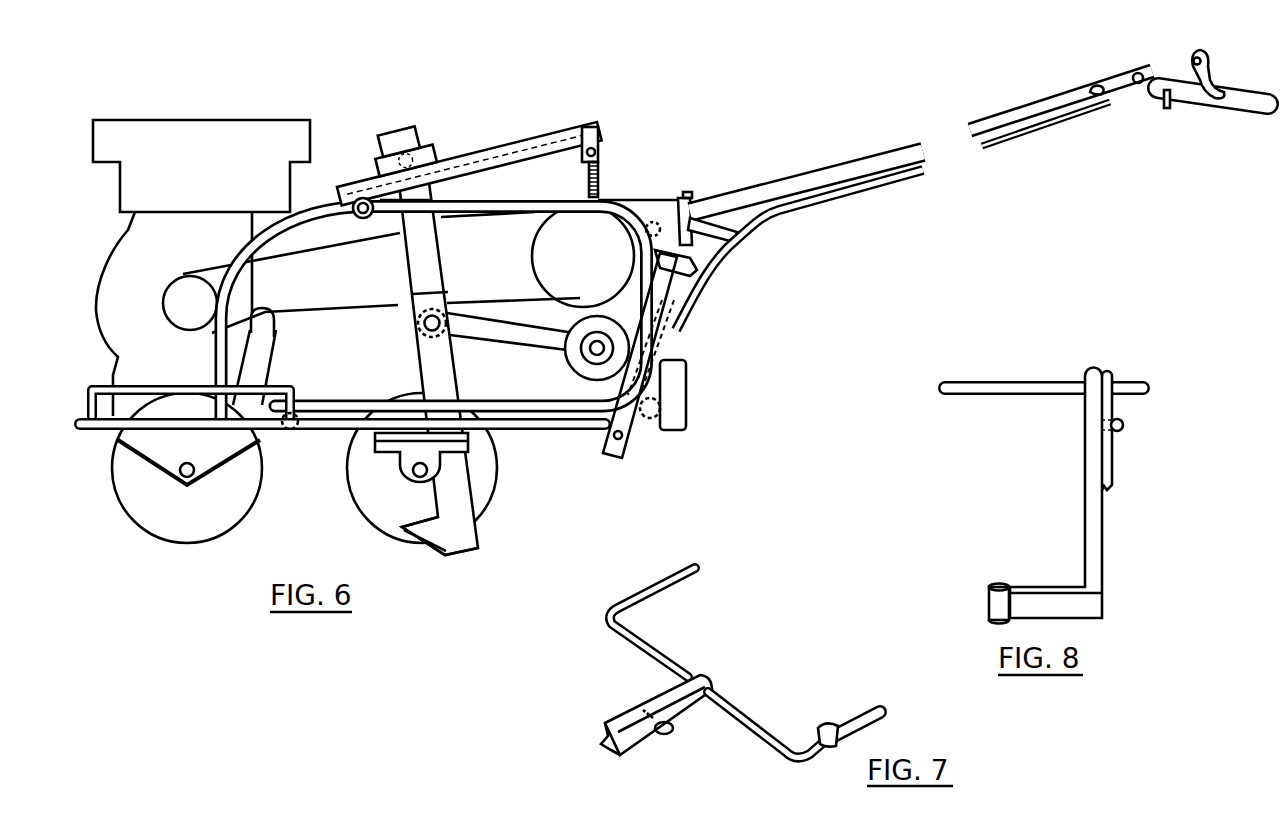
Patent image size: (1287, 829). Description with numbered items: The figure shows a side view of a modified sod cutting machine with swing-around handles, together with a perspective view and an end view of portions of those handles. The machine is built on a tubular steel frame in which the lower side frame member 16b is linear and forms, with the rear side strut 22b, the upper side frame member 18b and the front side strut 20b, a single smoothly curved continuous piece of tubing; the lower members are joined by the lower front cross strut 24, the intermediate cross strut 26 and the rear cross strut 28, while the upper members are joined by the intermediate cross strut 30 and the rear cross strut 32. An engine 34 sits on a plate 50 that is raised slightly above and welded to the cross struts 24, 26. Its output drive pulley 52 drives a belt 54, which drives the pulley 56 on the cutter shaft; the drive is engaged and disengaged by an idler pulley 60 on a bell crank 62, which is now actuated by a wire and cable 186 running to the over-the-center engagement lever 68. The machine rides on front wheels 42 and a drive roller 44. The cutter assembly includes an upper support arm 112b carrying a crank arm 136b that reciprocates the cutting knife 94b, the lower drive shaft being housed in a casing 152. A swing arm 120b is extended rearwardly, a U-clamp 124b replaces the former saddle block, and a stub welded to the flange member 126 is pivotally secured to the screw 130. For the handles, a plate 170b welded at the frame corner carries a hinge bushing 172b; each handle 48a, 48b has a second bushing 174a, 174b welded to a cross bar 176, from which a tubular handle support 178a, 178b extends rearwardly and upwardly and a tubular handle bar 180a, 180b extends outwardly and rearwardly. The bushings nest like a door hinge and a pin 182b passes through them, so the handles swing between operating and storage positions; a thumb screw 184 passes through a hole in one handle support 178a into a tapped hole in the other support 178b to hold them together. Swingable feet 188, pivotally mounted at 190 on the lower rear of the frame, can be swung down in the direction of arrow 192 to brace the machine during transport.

In FIG. 6, the engine 34 is at (178, 118).
In FIG. 6, the horizontal plate 50 is at (140, 350).
In FIG. 6, the output drive pulley 52 is at (163, 303).
In FIG. 6, the belt 54 is at (322, 247).
In FIG. 6, the idler pulley 60 is at (277, 325).
In FIG. 6, the bell crank 62 is at (272, 362).
In FIG. 6, the front wheels 42 is at (242, 512).
In FIG. 6, the drive roller 44 is at (497, 485).
In FIG. 6, the pulley 56 is at (537, 266).
In FIG. 6, the upper support arm 112b is at (446, 255).
In FIG. 6, the cutting knife 94b is at (470, 556).
In FIG. 6, the crank arm 136b is at (490, 347).
In FIG. 6, the casing 152 is at (588, 318).
In FIG. 6, the front side strut 20b is at (212, 378).
In FIG. 6, the upper side frame member 18b is at (500, 202).
In FIG. 6, the U-clamp 124b is at (366, 220).
In FIG. 6, the lower front cross strut 24 is at (92, 434).
In FIG. 6, the lower side frame member 16b is at (330, 428).
In FIG. 6, the lower intermediate cross strut 26 is at (290, 432).
In FIG. 6, the swing arm 120b is at (470, 152).
In FIG. 6, the upper intermediate cross strut 30 is at (360, 214).
In FIG. 6, the flange member 126 is at (592, 128).
In FIG. 6, the screw 130 is at (602, 172).
In FIG. 6, the plate 170b is at (643, 198).
In FIG. 6, the hinge bushing 172b is at (700, 197).
In FIG. 6, the second bushing 174b is at (735, 236).
In FIG. 6, the pin 182b is at (706, 252).
In FIG. 6, the rear side strut 22b is at (693, 298).
In FIG. 6, the tubular handle support 178b is at (810, 178).
In FIG. 7, the tubular handle support 178b is at (617, 753).
In FIG. 6, the wire and cable 186 is at (878, 182).
In FIG. 6, the handle 48b is at (856, 152).
In FIG. 8, the handle 48b is at (1120, 407).
In FIG. 6, the thumb screw 184 is at (1092, 88).
In FIG. 7, the thumb screw 184 is at (670, 733).
In FIG. 6, the over-the-center drive engagement lever 68 is at (1218, 72).
In FIG. 6, the upper rear cross strut 32 is at (646, 236).
In FIG. 6, the arrow 192 is at (693, 343).
In FIG. 6, the swingable feet 188 is at (668, 356).
In FIG. 6, the lower rear cross strut 28 is at (662, 409).
In FIG. 6, the pivot mounting 190 is at (624, 440).
In FIG. 7, the tubular handle bar 180a is at (648, 642).
In FIG. 7, the tubular handle bar 180b is at (748, 716).
In FIG. 7, the tubular handle support 178a is at (600, 735).
In FIG. 8, the handle 48a is at (992, 385).
In FIG. 8, the cross bar 176 is at (1047, 585).
In FIG. 8, the second bushing 174a is at (987, 600).